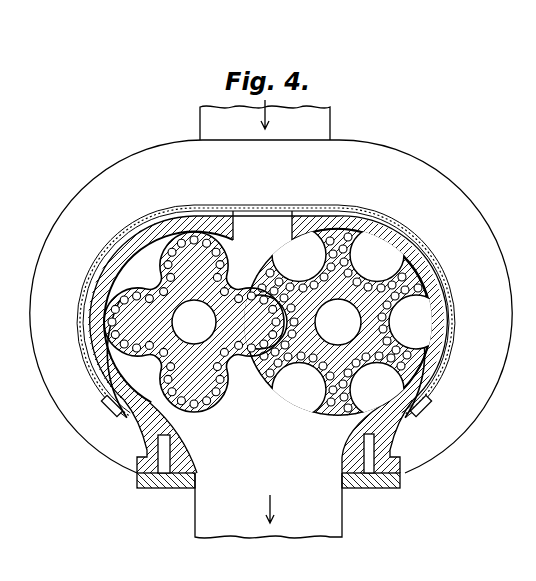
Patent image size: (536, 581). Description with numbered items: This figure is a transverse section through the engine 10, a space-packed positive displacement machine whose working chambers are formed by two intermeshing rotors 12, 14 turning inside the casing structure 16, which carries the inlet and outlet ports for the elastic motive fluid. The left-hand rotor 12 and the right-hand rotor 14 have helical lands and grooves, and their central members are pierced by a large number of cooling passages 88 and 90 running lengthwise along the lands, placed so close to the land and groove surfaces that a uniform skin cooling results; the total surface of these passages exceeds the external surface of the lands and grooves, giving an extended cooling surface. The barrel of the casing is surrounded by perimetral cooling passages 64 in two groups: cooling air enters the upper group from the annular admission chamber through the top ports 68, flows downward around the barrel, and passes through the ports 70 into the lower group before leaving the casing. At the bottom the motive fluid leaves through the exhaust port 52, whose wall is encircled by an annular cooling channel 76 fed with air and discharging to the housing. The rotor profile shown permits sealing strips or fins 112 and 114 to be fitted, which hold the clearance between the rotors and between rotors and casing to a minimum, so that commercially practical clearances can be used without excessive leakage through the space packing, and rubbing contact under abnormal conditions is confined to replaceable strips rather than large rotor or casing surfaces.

The engine 10 is at (423, 257).
The rotor 12 is at (180, 233).
The rotor 14 is at (367, 208).
The casing structure 16 is at (330, 214).
The exhaust port 52 is at (212, 464).
The cooling passages 64 is at (204, 213).
The top ports 68 is at (273, 205).
The ports 70 is at (118, 412).
The annular cooling channel 76 is at (158, 440).
The cooling passages 88 is at (200, 413).
The cooling passages 90 is at (328, 399).
The sealing strips 112 is at (103, 320).
The sealing strips 114 is at (432, 290).